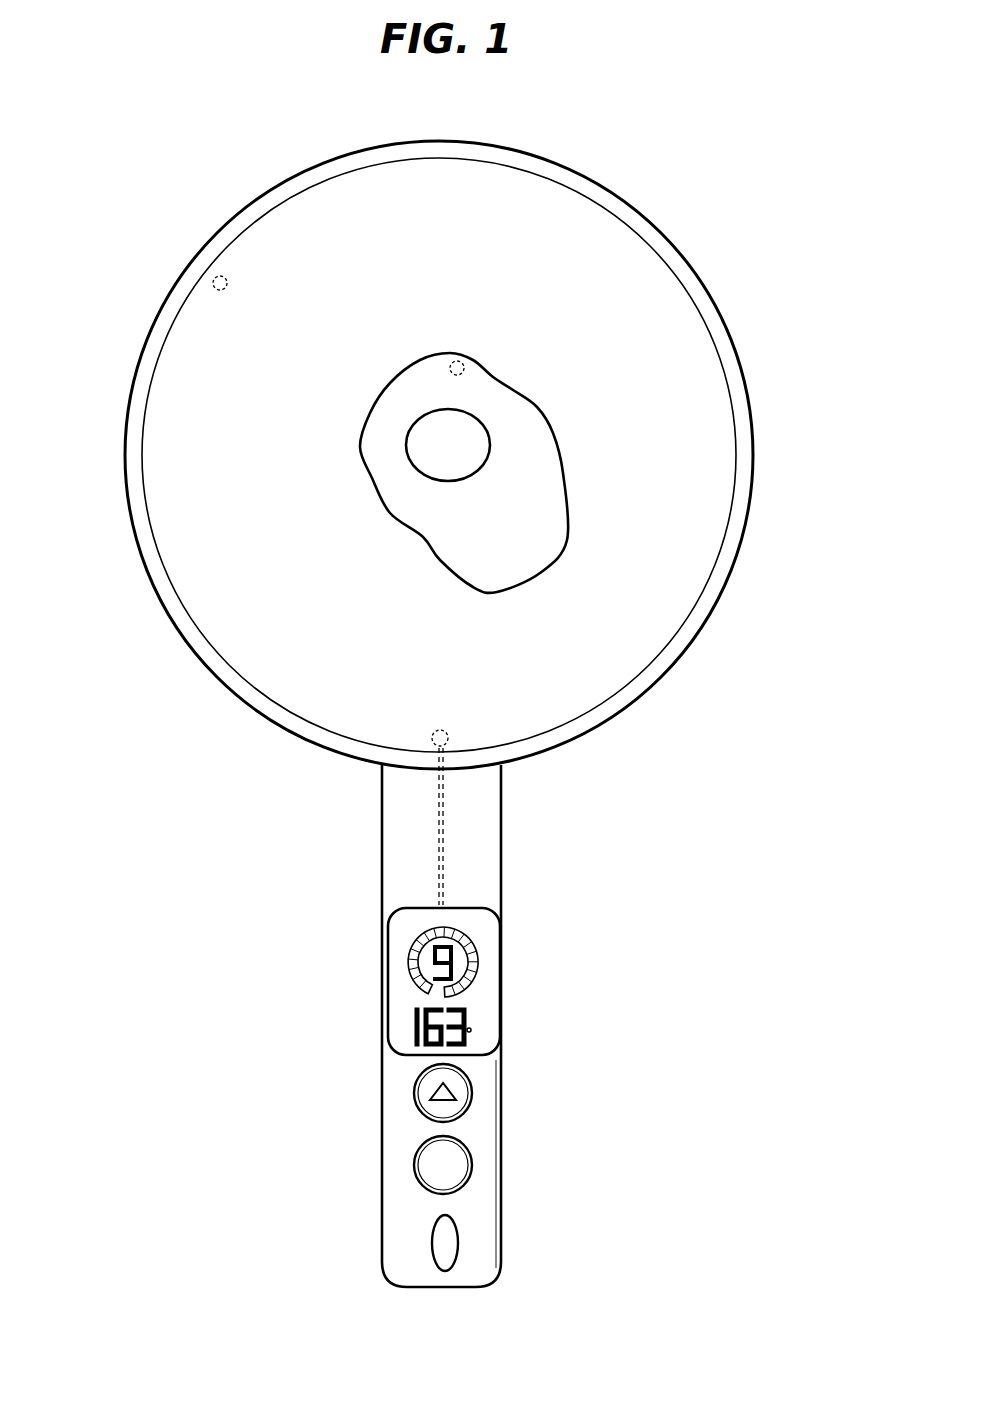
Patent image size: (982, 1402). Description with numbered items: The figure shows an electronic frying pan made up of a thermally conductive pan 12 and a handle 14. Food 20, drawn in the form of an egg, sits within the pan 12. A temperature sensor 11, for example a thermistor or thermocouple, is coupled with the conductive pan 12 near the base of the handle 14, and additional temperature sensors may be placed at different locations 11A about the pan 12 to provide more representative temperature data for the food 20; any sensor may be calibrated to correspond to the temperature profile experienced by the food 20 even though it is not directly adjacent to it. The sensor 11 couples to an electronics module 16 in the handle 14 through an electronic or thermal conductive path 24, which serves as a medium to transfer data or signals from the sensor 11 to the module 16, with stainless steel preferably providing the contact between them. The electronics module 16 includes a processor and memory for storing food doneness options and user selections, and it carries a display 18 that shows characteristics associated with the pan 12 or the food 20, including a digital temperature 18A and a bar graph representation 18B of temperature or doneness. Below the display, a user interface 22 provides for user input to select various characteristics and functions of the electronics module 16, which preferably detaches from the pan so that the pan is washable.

The temperature sensor 11 is at (432, 739).
The additional sensor locations 11A is at (213, 283).
The thermally conductive pan 12 is at (188, 507).
The handle 14 is at (495, 1117).
The electronics module 16 is at (512, 962).
The display 18 is at (402, 1015).
The digital temperature 18A is at (470, 1010).
The bar graph representation 18B is at (405, 962).
The food 20 is at (537, 515).
The user interface 22 is at (422, 1088).
The conductive path 24 is at (443, 819).